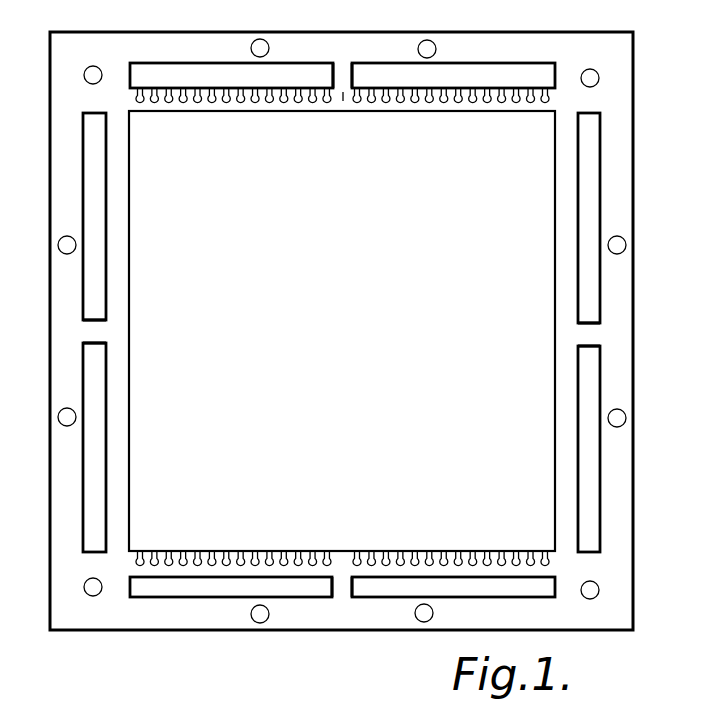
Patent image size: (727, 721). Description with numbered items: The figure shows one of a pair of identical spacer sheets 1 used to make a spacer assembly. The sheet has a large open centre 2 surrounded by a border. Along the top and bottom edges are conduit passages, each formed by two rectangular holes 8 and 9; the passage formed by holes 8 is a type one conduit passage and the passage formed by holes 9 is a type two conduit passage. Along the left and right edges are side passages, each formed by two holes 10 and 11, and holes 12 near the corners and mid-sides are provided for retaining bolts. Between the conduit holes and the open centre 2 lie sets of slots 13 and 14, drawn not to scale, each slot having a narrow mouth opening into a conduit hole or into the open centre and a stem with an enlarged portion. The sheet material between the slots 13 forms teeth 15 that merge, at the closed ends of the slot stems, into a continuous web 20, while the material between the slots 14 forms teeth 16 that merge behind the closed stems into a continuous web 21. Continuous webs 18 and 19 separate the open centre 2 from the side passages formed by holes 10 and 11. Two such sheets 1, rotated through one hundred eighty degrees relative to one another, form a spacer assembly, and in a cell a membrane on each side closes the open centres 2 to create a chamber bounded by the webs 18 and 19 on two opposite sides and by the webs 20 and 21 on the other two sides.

The spacer sheet 1 is at (633, 444).
The open centre 2 is at (490, 285).
The rectangular holes 8 is at (285, 75).
The rectangular holes 9 is at (200, 587).
The holes 10 is at (590, 157).
The holes 11 is at (95, 298).
The holes for retaining bolts 12 is at (93, 73).
The slots 13 is at (403, 100).
The slots 14 is at (242, 553).
The teeth 15 is at (191, 100).
The teeth 16 is at (175, 553).
The continuous web 18 is at (118, 333).
The continuous web 19 is at (570, 333).
The continuous web 20 is at (344, 112).
The continuous web 21 is at (322, 553).